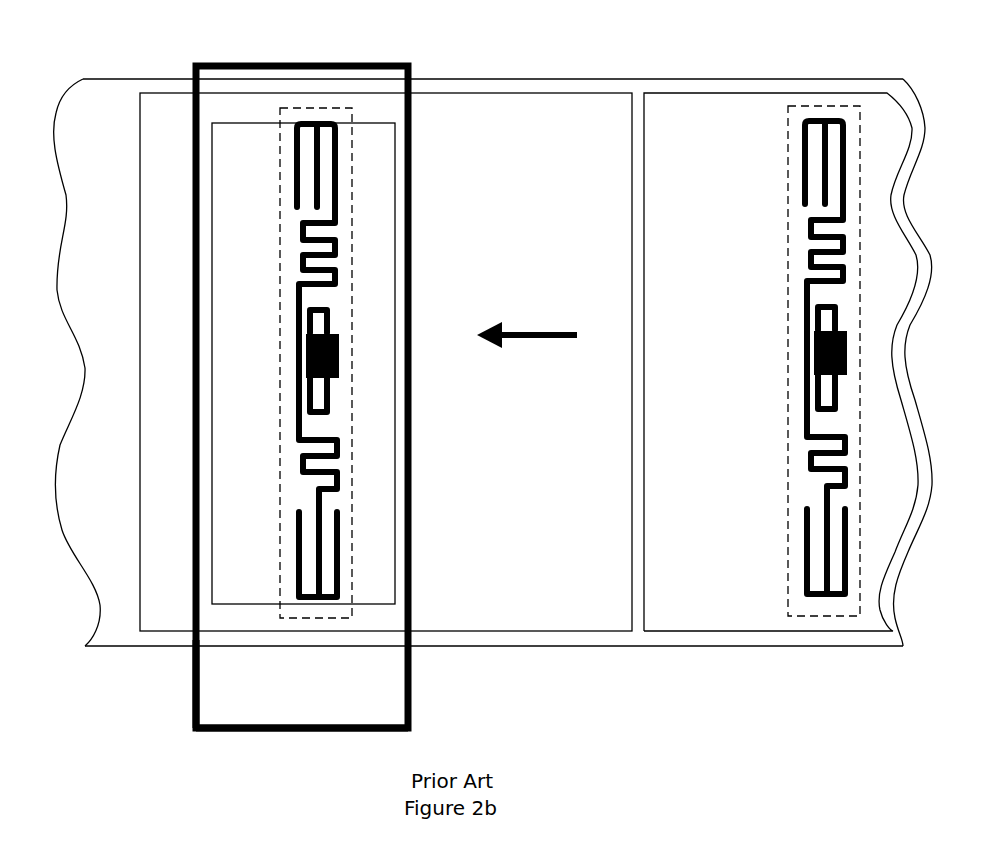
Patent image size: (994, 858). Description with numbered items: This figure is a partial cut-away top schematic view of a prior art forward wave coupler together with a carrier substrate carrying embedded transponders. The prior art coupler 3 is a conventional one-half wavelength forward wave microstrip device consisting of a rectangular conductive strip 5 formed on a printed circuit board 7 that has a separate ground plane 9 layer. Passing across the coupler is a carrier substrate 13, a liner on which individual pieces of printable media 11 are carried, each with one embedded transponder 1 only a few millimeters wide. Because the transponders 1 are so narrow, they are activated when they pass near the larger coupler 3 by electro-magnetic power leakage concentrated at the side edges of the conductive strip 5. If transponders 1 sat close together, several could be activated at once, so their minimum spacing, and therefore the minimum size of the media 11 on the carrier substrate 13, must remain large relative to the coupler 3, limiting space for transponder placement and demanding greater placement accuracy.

The transponder 1 is at (338, 118).
The prior art coupler 3 is at (257, 50).
The conductive strip 5 is at (227, 145).
The printed circuit board 7 is at (192, 673).
The ground plane 9 is at (358, 672).
The media 11 is at (550, 603).
The carrier substrate 13 is at (493, 362).